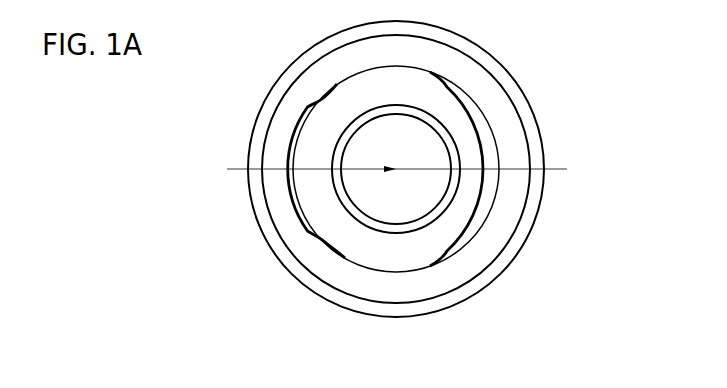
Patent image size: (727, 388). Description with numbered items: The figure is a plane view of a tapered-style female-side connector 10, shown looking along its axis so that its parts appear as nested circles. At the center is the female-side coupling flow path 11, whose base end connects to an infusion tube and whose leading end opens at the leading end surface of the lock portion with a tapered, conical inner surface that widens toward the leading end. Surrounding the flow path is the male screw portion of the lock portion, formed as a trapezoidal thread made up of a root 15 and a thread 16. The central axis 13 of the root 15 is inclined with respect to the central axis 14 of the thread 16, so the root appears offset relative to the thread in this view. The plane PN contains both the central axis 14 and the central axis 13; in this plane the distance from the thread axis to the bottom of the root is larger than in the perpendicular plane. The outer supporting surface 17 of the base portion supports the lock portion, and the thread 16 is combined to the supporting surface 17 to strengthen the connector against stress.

The female-side connector 10 is at (558, 74).
The female-side coupling flow path 11 is at (452, 142).
The central axis of the root 13 is at (425, 112).
The central axis of the thread 14 is at (425, 112).
The root 15 is at (307, 117).
The thread 16 is at (289, 182).
The supporting surface 17 is at (490, 248).
The plane PN is at (560, 170).